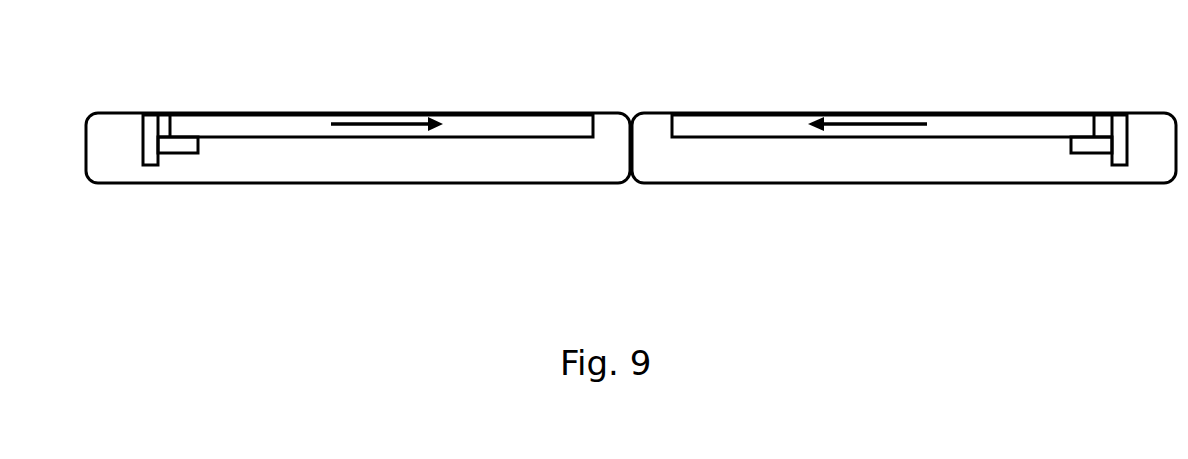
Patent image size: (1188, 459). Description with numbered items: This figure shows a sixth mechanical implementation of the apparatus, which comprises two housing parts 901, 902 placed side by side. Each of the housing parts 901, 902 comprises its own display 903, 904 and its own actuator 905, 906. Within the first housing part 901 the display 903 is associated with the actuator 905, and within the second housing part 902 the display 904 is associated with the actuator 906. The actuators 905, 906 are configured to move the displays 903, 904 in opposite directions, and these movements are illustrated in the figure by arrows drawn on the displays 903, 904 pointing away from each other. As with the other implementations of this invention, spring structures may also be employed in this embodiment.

The housing part 901 is at (809, 183).
The housing part 902 is at (527, 183).
The display 903 is at (978, 113).
The display 904 is at (315, 113).
The actuator 905 is at (1128, 127).
The actuator 906 is at (142, 127).